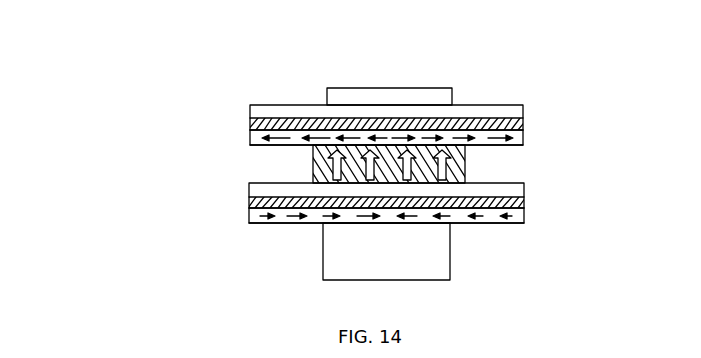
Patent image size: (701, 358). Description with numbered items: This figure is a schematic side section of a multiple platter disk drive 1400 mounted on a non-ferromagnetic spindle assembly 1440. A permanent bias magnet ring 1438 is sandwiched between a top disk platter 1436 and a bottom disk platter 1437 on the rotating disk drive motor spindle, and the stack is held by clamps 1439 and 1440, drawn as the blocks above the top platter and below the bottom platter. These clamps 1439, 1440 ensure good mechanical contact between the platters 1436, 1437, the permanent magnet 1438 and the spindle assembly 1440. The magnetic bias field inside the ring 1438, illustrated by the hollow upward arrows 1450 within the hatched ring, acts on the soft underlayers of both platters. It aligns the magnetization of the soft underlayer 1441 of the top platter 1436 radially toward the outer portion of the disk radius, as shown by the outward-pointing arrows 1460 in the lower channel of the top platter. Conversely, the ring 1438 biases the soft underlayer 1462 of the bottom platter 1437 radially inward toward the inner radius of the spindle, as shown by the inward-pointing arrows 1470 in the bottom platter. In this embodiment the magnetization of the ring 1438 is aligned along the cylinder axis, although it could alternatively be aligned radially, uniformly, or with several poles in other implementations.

The multiple platter disk drive 1400 is at (73, 37).
The top disk platter 1436 is at (523, 124).
The bottom disk platter 1437 is at (524, 205).
The permanent bias magnet ring 1438 is at (465, 168).
The clamp 1439 is at (452, 97).
The spindle assembly 1440 is at (450, 263).
The soft underlayer 1441 is at (250, 137).
The arrows 1450 is at (314, 176).
The arrows 1460 is at (307, 139).
The soft underlayer 1462 is at (524, 221).
The arrows 1470 is at (302, 224).